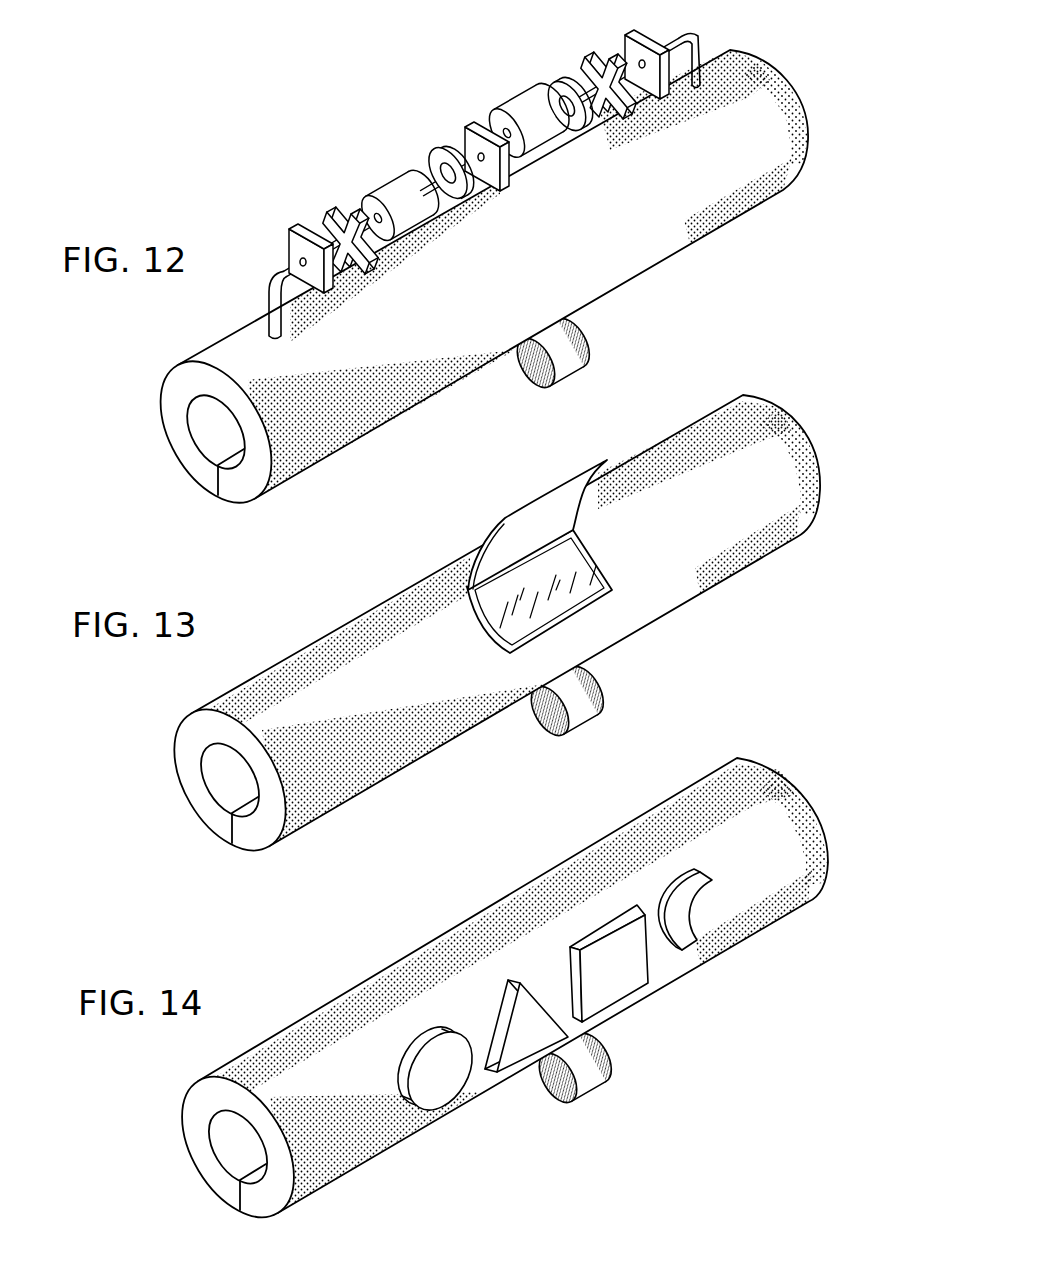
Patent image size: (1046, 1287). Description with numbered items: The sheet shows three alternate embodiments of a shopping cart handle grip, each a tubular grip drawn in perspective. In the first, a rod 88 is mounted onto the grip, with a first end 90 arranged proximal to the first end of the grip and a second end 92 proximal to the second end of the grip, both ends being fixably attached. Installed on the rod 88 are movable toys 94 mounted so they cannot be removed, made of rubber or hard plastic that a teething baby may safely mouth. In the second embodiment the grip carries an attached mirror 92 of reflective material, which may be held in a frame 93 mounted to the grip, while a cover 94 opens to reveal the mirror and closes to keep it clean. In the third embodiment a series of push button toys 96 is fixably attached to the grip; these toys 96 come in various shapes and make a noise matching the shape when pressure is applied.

In FIG. 12, the rod 88 is at (427, 182).
In FIG. 12, the first end of the rod 90 is at (270, 297).
In FIG. 12, the second end of the rod / mirror 92 is at (712, 52).
In FIG. 13, the second end of the rod / mirror 92 is at (553, 593).
In FIG. 13, the frame 93 is at (612, 572).
In FIG. 12, the toys / cover 94 is at (542, 90).
In FIG. 13, the toys / cover 94 is at (550, 513).
In FIG. 14, the push button toys 96 is at (615, 953).